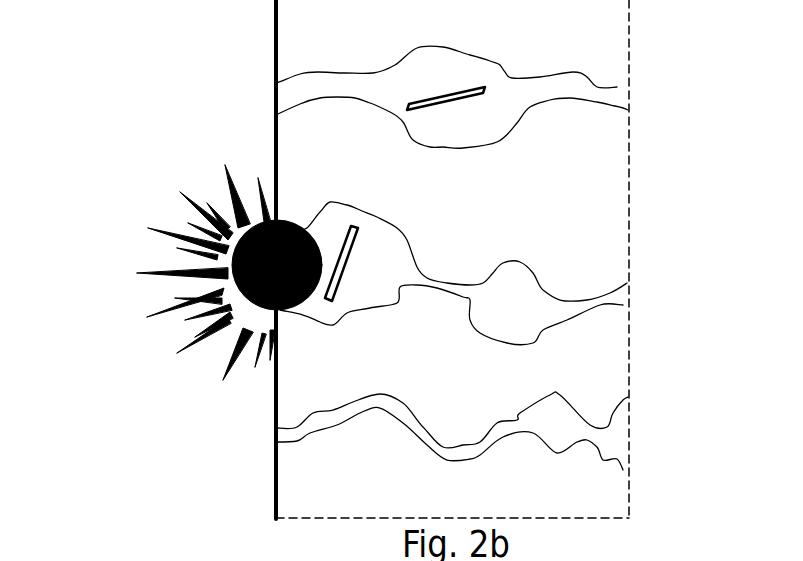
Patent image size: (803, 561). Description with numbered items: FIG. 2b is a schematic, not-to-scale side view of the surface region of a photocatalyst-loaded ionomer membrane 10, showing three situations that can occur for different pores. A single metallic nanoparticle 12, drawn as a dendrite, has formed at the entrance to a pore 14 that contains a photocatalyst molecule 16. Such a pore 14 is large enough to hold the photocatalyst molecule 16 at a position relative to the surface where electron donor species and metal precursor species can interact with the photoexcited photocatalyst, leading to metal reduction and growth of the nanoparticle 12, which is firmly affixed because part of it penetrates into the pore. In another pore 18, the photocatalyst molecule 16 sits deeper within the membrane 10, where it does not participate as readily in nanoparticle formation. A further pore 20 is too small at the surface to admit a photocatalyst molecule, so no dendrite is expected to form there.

The membrane 10 is at (603, 185).
The nanoparticle 12 is at (185, 283).
The pore 14 is at (338, 217).
The photocatalyst molecule 16 is at (484, 88).
The pore 18 is at (300, 83).
The pore 20 is at (345, 412).